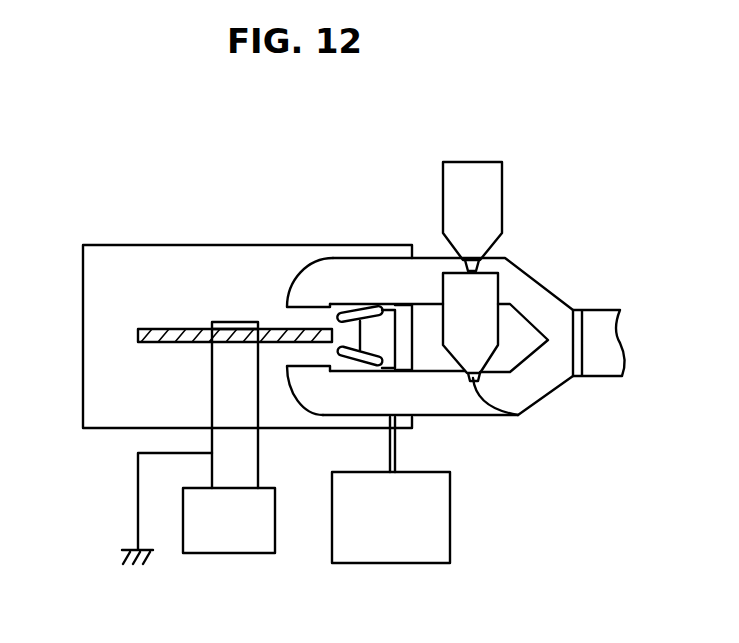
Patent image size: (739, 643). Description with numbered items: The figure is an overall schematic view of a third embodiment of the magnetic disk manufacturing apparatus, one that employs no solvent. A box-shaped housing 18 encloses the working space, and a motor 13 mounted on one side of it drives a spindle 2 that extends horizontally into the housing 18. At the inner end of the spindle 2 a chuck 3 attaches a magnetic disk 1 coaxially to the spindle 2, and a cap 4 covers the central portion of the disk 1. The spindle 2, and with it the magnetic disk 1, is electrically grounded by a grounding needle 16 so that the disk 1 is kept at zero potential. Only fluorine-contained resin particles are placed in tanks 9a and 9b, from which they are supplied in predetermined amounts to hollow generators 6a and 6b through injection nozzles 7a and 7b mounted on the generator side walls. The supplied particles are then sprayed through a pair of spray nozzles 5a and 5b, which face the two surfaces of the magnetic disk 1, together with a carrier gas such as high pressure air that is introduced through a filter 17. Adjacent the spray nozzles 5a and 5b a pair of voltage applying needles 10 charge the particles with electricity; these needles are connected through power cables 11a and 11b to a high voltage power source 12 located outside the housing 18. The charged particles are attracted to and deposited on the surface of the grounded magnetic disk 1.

The magnetic disk 1 is at (137, 332).
The spindle 2 is at (223, 398).
The chuck 3 is at (235, 332).
The cap 4 is at (220, 322).
The spray nozzle 5a is at (315, 306).
The spray nozzle 5b is at (298, 358).
The generator 6a is at (367, 285).
The generator 6b is at (367, 393).
The injection nozzle 7a is at (497, 262).
The injection nozzle 7b is at (518, 408).
The tank 9a is at (472, 177).
The tank 9b is at (480, 312).
The voltage applying needles 10 is at (374, 337).
The power cable 11a is at (395, 453).
The power cable 11b is at (390, 453).
The high voltage power source 12 is at (450, 513).
The motor 13 is at (223, 555).
The grounding needle 16 is at (137, 518).
The filter 17 is at (620, 313).
The housing 18 is at (120, 245).